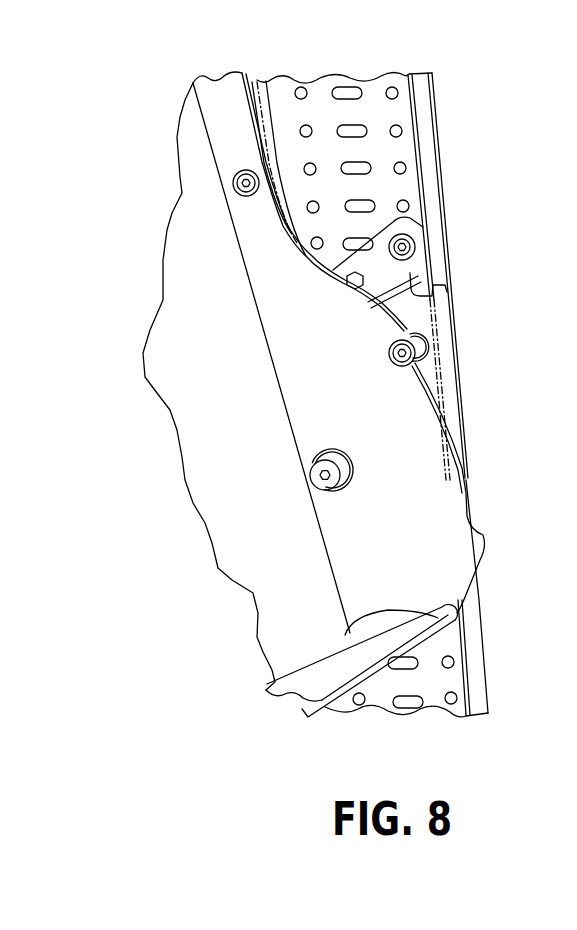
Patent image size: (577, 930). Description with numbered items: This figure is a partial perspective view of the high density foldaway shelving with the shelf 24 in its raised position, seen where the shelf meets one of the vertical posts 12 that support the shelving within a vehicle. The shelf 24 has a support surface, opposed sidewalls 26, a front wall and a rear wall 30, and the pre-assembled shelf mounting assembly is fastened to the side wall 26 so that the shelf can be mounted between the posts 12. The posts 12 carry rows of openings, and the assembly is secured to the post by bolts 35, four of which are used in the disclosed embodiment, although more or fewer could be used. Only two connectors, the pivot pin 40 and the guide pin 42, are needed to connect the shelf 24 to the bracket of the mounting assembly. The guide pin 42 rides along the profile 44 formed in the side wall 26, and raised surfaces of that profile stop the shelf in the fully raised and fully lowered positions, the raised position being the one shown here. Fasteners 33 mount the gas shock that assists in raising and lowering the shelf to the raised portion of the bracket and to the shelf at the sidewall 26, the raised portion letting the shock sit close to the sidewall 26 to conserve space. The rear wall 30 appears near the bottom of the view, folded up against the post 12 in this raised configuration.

The post 12 is at (372, 92).
The shelf 24 is at (226, 391).
The sidewall 26 is at (210, 117).
The rear wall 30 is at (328, 695).
The fastener 33 is at (233, 183).
The bolt 35 is at (414, 248).
The pivot pin 40 is at (320, 486).
The guide pin 42 is at (414, 358).
The profile 44 is at (463, 481).